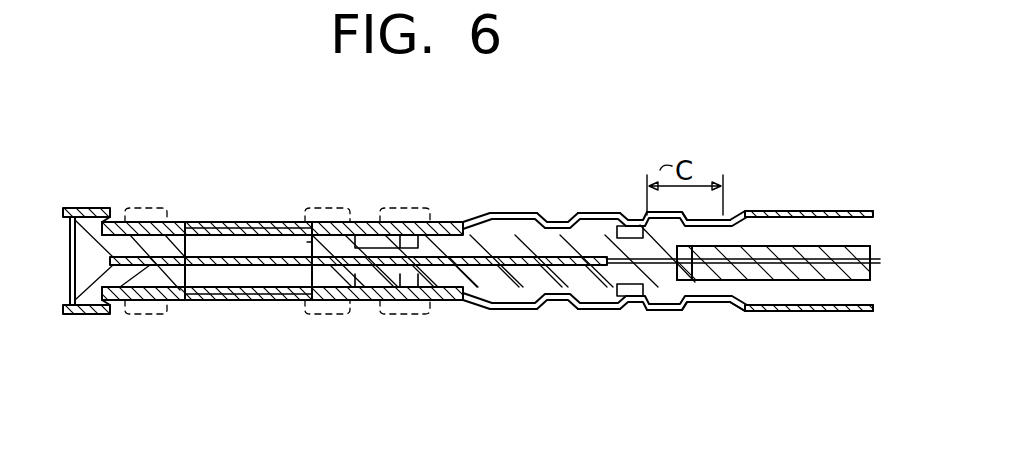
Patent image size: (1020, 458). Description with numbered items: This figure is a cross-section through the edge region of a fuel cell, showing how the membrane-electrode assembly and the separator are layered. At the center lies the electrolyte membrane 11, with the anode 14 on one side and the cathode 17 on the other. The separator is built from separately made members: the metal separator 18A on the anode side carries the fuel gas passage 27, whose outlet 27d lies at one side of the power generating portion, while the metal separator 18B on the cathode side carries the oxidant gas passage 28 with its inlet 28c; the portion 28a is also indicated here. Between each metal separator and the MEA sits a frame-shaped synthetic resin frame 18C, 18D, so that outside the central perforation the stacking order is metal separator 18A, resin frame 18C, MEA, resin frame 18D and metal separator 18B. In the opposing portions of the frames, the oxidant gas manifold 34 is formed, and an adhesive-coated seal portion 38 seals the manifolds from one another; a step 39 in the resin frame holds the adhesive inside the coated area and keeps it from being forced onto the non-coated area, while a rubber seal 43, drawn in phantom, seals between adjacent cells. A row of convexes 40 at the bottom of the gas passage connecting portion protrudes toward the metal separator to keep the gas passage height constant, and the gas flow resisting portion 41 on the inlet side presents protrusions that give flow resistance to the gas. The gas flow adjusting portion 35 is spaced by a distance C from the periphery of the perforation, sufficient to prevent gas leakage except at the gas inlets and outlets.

The electrolyte membrane 11 is at (860, 213).
The anode 14 is at (860, 313).
The cathode 17 is at (835, 244).
The metal separator 18A is at (740, 302).
The metal separator 18B is at (735, 220).
The synthetic resin frame 18C is at (363, 278).
The synthetic resin frame 18D is at (437, 228).
The fuel gas passage 27 is at (815, 311).
The outlet from the fuel gas passage 27d is at (757, 304).
The oxidant gas passage 28 is at (777, 246).
The connecting member portion 28a is at (797, 234).
The inlet to the oxidant gas passage 28c is at (757, 230).
The oxidant gas manifold 34 is at (263, 245).
The gas flow adjusting portion 35 is at (625, 213).
The seal portion 38 is at (168, 303).
The step 39 is at (113, 212).
The convexes 40 is at (512, 213).
The gas flow resisting portion 41 is at (405, 212).
The rubber seal 43 is at (152, 208).